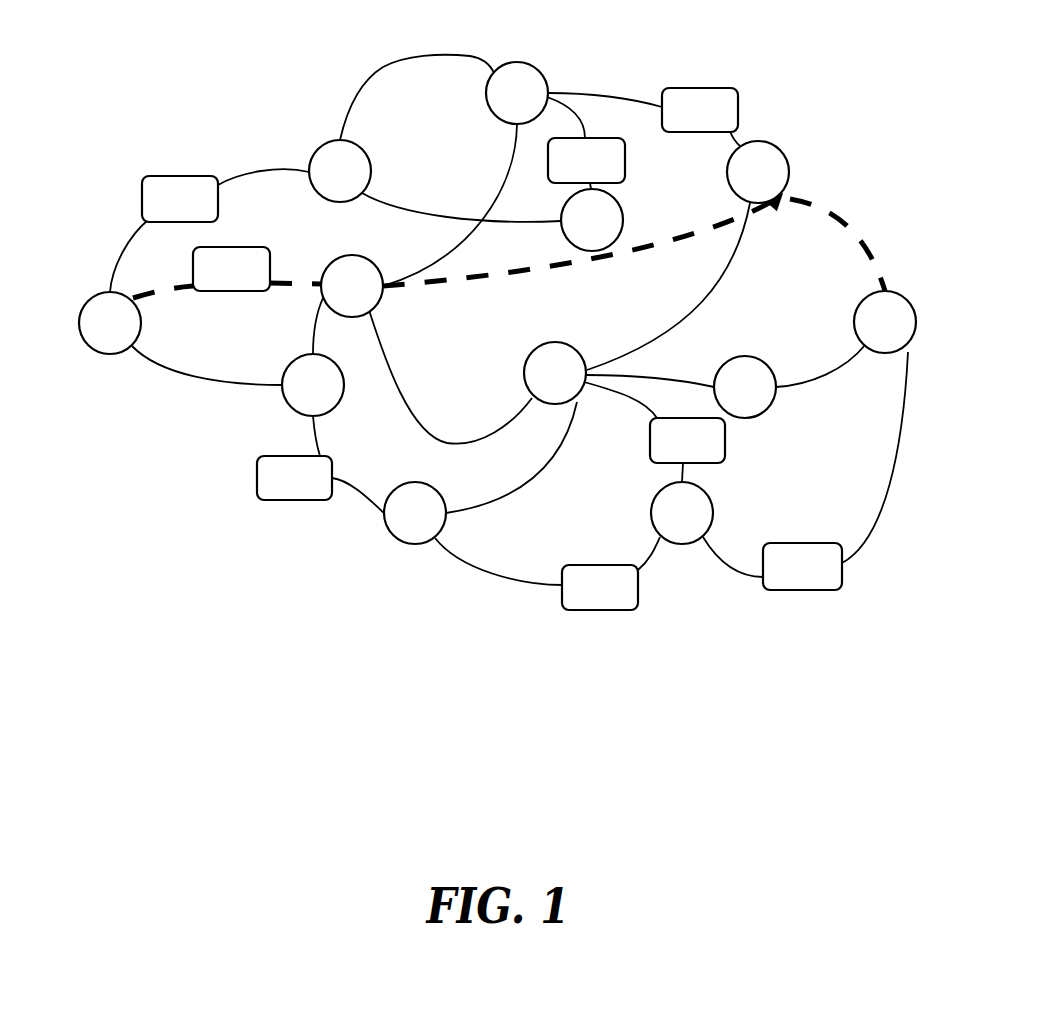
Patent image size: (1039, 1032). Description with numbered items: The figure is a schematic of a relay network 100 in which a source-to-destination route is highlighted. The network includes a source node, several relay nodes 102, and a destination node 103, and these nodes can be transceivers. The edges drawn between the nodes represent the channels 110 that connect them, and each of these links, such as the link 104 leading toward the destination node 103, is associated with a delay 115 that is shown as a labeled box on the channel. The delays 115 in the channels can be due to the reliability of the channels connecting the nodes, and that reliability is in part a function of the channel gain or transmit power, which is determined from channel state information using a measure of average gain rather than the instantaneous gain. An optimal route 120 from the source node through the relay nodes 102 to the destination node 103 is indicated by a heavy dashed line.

The network 100 is at (541, 443).
The relay nodes 102 is at (324, 142).
The destination node 103 is at (916, 321).
The link 104 is at (892, 469).
The channels 110 is at (384, 67).
The delays 115 is at (703, 88).
The optimal route 120 is at (848, 214).